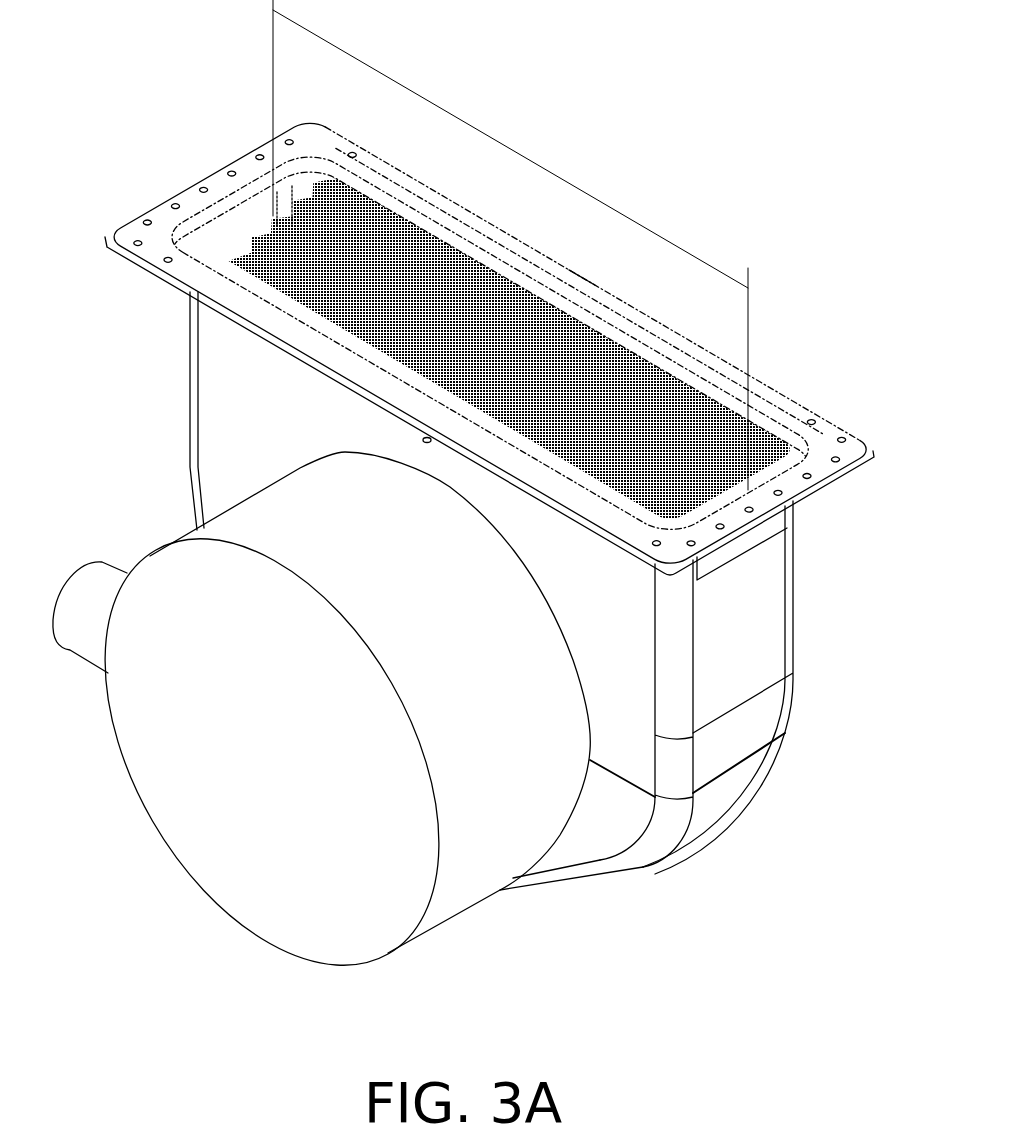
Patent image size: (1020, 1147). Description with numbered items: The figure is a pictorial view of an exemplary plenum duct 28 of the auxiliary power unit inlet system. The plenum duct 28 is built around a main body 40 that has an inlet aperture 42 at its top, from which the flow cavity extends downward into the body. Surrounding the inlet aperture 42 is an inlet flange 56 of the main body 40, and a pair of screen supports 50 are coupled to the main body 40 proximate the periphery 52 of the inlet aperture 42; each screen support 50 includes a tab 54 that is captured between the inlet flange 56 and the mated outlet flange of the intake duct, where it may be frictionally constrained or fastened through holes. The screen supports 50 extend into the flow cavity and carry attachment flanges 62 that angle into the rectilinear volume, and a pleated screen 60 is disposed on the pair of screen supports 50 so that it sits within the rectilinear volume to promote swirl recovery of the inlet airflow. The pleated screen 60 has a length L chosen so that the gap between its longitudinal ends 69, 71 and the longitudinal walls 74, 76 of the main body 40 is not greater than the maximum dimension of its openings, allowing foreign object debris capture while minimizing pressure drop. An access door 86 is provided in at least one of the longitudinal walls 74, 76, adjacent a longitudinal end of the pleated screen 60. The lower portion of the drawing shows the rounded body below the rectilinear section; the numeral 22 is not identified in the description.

The blower 22 is at (327, 900).
The plenum duct 28 is at (590, 178).
The main body 40 is at (240, 453).
The inlet aperture 42 is at (262, 228).
The screen supports 50 is at (220, 287).
The periphery 52 is at (323, 157).
The tab 54 is at (353, 370).
The inlet flange 56 is at (823, 430).
The pleated screen 60 is at (432, 267).
The attachment flanges 62 is at (673, 397).
The longitudinal end 69 is at (273, 218).
The longitudinal end 71 is at (748, 483).
The longitudinal wall 74 is at (220, 238).
The longitudinal wall 76 is at (747, 617).
The access door 86 is at (742, 540).
The length L is at (498, 133).